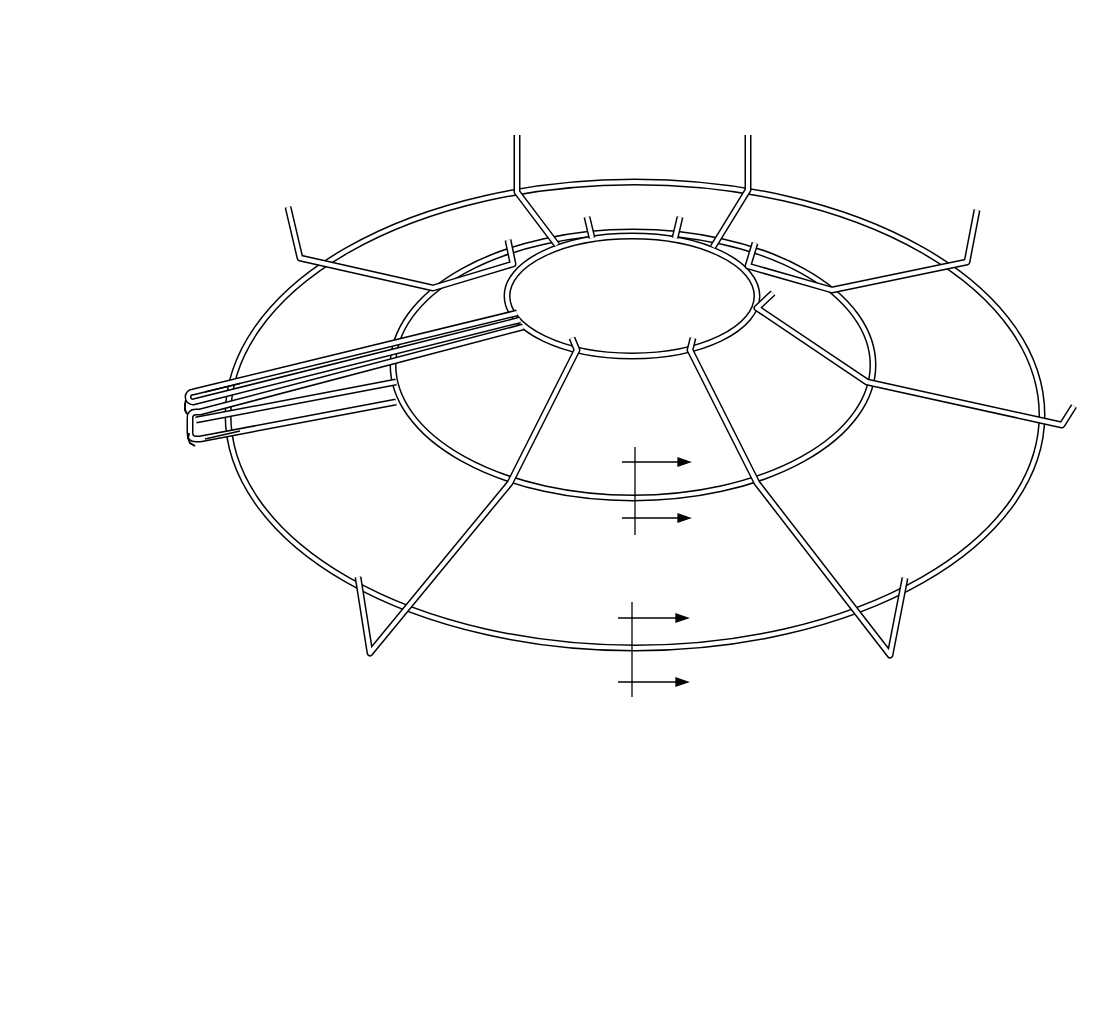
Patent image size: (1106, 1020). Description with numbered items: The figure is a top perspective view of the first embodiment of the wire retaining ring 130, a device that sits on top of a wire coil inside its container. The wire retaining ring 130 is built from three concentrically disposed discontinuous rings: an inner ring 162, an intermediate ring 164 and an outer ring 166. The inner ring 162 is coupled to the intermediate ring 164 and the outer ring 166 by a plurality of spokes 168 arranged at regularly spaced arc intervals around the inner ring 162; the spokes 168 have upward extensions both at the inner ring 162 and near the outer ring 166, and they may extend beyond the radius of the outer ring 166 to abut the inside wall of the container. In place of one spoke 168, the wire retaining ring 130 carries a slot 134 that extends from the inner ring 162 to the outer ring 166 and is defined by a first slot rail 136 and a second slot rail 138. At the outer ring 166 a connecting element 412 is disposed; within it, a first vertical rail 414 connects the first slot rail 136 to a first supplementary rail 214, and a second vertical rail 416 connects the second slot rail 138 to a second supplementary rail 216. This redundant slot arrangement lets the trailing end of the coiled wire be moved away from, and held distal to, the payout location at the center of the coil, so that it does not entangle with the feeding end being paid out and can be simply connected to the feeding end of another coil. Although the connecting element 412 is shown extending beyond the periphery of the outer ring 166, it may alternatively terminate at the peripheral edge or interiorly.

The wire retaining ring 130 is at (197, 128).
The slot 134 is at (252, 423).
The first slot rail 136 is at (210, 390).
The second slot rail 138 is at (280, 388).
The inner ring 162 is at (717, 249).
The intermediate ring 164 is at (788, 262).
The outer ring 166 is at (877, 232).
The spokes 168 is at (910, 268).
The first supplementary rail 214 is at (210, 421).
The second supplementary rail 216 is at (214, 447).
The connecting element 412 is at (165, 393).
The first vertical rail 414 is at (186, 410).
The second vertical rail 416 is at (192, 442).